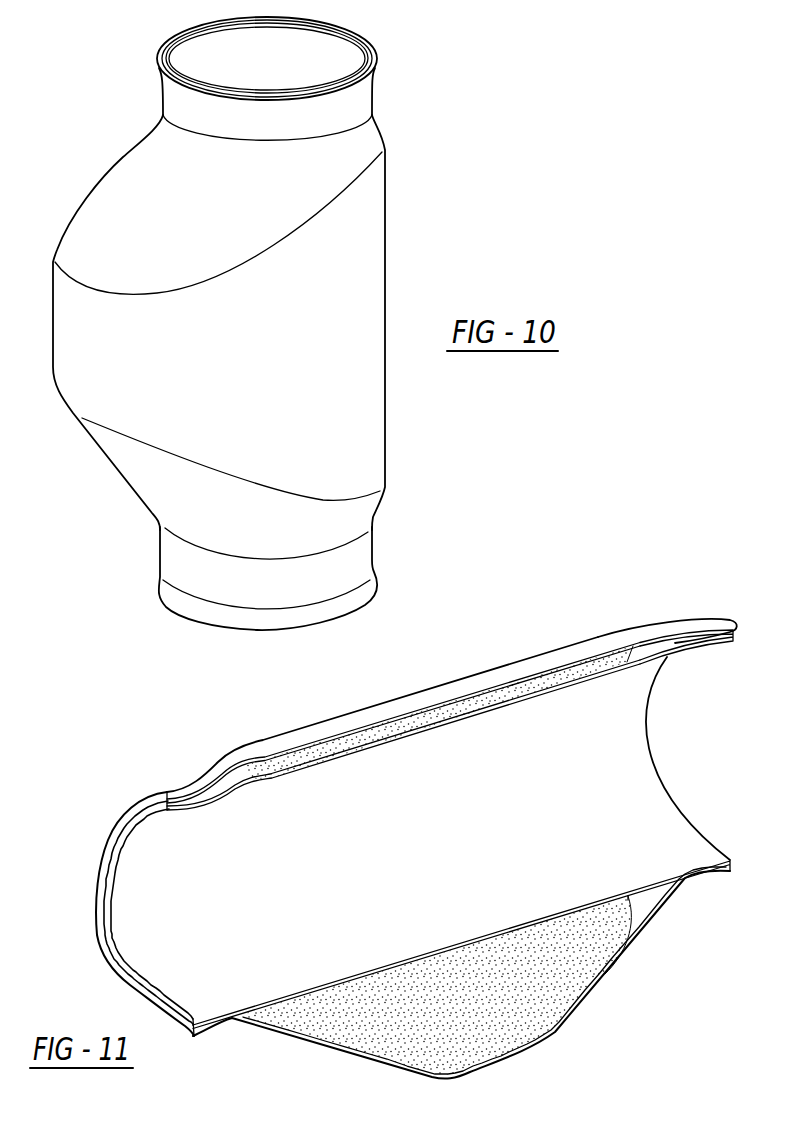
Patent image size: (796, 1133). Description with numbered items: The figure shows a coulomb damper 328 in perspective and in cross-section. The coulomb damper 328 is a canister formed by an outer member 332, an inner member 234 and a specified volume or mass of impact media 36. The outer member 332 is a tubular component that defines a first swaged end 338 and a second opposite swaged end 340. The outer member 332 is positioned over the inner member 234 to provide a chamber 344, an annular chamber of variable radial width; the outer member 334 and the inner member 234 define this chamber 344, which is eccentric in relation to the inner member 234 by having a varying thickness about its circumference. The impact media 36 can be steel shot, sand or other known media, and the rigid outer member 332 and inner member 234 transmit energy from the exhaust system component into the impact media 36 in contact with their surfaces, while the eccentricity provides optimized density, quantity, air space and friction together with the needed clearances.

In FIG. 10, the coulomb damper 328 is at (466, 78).
In FIG. 11, the coulomb damper 328 is at (194, 722).
In FIG. 10, the outer member 332 is at (347, 427).
In FIG. 11, the outer member 332 is at (378, 1058).
In FIG. 10, the outer member 334 is at (207, 52).
In FIG. 10, the first swaged end 338 is at (183, 563).
In FIG. 11, the first swaged end 338 is at (192, 782).
In FIG. 10, the second swaged end 340 is at (352, 103).
In FIG. 11, the second swaged end 340 is at (697, 640).
In FIG. 11, the inner member 234 is at (275, 777).
In FIG. 11, the chamber 344 is at (488, 984).
In FIG. 11, the impact media 36 is at (555, 950).